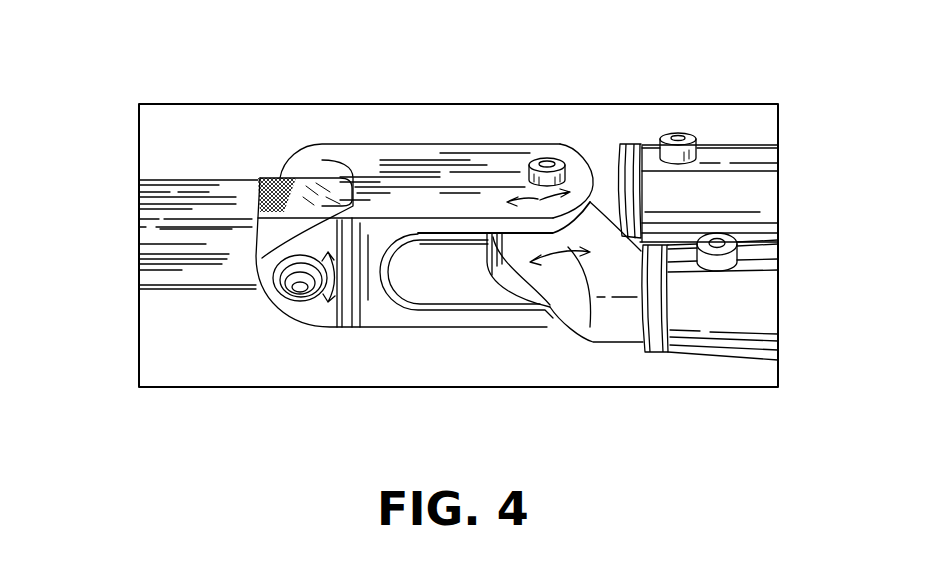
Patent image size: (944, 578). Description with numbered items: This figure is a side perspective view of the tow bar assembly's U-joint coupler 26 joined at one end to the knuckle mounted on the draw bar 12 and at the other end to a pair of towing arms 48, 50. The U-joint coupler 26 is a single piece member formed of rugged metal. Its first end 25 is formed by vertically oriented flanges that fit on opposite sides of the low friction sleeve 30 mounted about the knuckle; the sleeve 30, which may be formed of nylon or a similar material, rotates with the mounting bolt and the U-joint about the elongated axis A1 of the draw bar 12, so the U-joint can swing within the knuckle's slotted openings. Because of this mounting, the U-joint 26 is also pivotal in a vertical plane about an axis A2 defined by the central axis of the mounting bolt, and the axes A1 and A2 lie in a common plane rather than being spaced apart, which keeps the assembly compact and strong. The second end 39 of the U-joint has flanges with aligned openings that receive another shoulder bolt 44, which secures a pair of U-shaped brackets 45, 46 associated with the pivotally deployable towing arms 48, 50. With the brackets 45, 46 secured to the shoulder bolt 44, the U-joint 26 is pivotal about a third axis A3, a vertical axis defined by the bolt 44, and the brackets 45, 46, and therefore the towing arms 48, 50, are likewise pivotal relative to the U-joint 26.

The draw bar 12 is at (181, 180).
The low friction sleeve 30 is at (266, 178).
The U-joint coupler 26 is at (419, 339).
The second end 39 is at (538, 320).
The first end 25 is at (279, 310).
The shoulder bolt 44 is at (544, 161).
The U-shaped bracket 45 is at (612, 328).
The U-shaped bracket 46 is at (604, 120).
The towing arm 48 is at (717, 362).
The towing arm 50 is at (750, 168).
The elongated axis A1 is at (127, 230).
The axis A2 is at (300, 292).
The third axis A3 is at (553, 108).